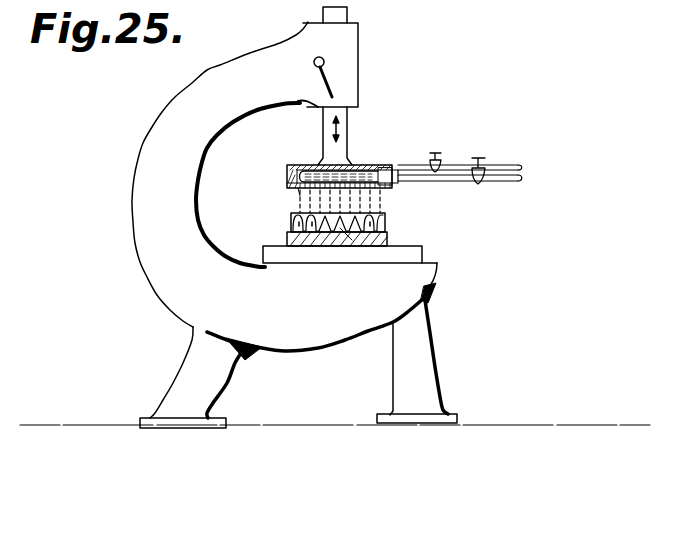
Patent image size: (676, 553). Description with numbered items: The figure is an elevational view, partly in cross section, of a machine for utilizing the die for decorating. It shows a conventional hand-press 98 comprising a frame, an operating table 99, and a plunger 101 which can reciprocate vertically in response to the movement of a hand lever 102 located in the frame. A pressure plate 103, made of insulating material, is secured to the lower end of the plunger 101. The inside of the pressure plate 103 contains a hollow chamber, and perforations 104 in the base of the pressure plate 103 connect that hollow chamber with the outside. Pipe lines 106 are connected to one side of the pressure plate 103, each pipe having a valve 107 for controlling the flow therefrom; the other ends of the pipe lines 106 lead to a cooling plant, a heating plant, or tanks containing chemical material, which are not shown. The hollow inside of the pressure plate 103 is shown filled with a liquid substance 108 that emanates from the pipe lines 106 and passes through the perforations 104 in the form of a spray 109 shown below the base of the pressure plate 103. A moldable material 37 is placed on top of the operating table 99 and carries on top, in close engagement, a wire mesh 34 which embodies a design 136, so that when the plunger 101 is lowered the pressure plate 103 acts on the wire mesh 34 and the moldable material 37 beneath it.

The hand-press 98 is at (362, 40).
The hand lever 102 is at (336, 83).
The plunger 101 is at (349, 127).
The liquid substance 108 is at (302, 167).
The pressure plate 103 is at (363, 176).
The pipe lines 106 is at (520, 178).
The valve 107 is at (479, 160).
The spray 109 is at (378, 193).
The perforations 104 is at (304, 193).
The wire mesh 34 is at (291, 223).
The moldable material 37 is at (388, 240).
The operating table 99 is at (422, 257).
The design 136 is at (345, 229).